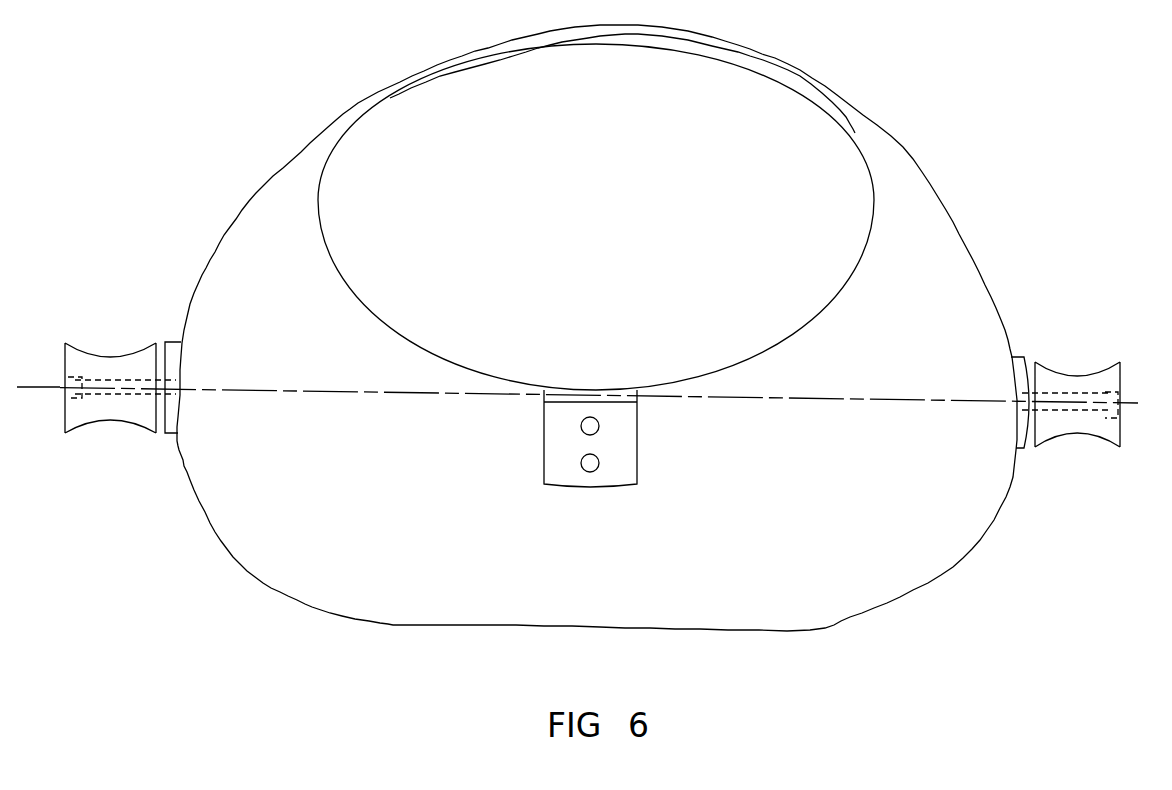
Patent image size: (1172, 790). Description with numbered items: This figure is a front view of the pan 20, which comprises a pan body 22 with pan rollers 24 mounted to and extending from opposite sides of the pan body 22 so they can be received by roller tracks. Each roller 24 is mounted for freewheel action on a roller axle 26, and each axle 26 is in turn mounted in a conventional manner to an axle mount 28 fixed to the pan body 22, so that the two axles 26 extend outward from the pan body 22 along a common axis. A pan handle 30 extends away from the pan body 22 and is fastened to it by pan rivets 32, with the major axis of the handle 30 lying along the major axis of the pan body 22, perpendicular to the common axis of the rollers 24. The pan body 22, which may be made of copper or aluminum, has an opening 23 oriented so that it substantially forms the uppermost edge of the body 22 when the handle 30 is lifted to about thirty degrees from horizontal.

The pan 20 is at (226, 161).
The pan body 22 is at (602, 579).
The opening 23 is at (797, 333).
The pan roller 24 is at (111, 365).
The roller axle 26 is at (111, 420).
The axle mount 28 is at (178, 359).
The pan handle 30 is at (545, 398).
The pan rivet 32 is at (597, 430).